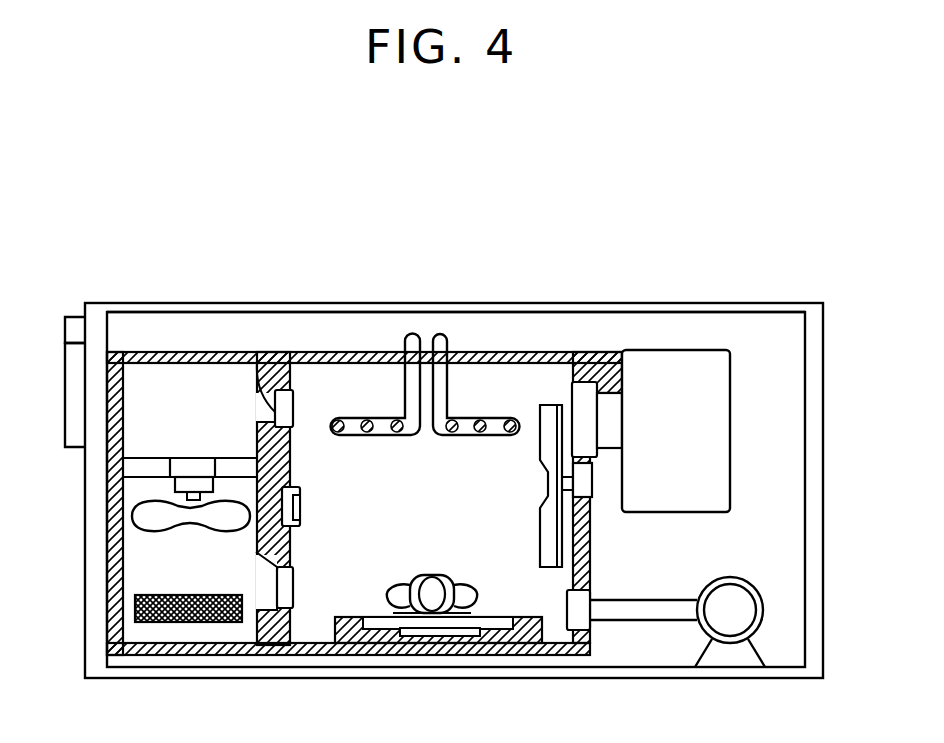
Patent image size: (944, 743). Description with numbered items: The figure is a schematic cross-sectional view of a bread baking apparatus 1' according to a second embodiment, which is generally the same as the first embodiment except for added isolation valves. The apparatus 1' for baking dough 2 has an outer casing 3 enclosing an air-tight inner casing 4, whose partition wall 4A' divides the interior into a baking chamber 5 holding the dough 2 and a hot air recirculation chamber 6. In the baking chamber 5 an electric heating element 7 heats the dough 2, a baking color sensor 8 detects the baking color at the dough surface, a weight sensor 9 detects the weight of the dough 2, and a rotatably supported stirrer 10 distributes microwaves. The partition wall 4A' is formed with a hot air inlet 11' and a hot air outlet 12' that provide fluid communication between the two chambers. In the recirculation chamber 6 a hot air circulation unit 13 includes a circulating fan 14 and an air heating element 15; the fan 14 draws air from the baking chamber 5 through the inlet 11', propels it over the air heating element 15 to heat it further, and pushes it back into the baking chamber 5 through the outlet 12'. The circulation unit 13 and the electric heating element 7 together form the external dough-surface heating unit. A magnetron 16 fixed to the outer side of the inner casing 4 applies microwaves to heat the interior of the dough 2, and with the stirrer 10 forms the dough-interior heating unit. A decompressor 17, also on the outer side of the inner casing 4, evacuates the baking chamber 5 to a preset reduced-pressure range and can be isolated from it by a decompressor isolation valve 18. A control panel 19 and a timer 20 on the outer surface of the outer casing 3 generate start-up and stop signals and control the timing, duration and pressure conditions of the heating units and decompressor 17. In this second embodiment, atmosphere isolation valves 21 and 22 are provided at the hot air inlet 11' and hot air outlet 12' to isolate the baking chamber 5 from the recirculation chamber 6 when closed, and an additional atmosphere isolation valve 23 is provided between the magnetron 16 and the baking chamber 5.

The bread baking apparatus 1' is at (456, 230).
The dough 2 is at (483, 600).
The outer casing 3 is at (813, 304).
The inner casing 4 is at (297, 352).
The partition wall 4A' is at (322, 535).
The baking chamber 5 is at (483, 378).
The hot air recirculation chamber 6 is at (173, 378).
The electric heating element 7 is at (355, 418).
The baking color sensor 8 is at (300, 513).
The weight sensor 9 is at (422, 630).
The stirrer 10 is at (552, 405).
The hot air inlet 11' is at (244, 408).
The hot air outlet 12' is at (250, 579).
The hot air circulation unit 13 is at (152, 564).
The circulating fan 14 is at (143, 515).
The air heating element 15 is at (175, 622).
The magnetron 16 is at (673, 365).
The decompressor 17 is at (703, 643).
The decompressor isolation valve 18 is at (580, 613).
The control panel 19 is at (65, 417).
The timer 20 is at (72, 316).
The atmosphere isolation valve 21 is at (250, 378).
The atmosphere isolation valve 22 is at (293, 567).
The atmosphere isolation valve 23 is at (572, 368).